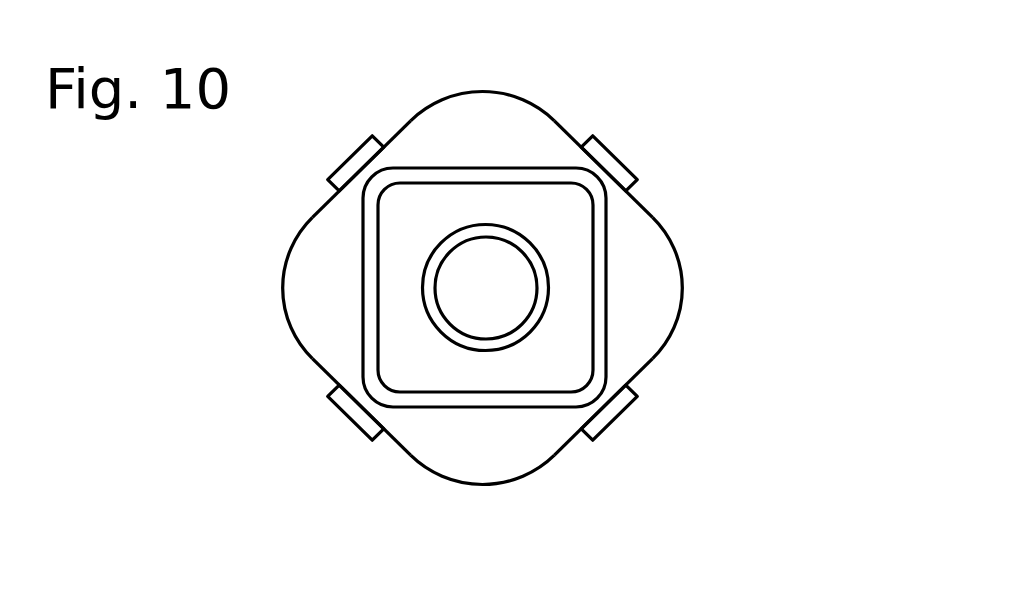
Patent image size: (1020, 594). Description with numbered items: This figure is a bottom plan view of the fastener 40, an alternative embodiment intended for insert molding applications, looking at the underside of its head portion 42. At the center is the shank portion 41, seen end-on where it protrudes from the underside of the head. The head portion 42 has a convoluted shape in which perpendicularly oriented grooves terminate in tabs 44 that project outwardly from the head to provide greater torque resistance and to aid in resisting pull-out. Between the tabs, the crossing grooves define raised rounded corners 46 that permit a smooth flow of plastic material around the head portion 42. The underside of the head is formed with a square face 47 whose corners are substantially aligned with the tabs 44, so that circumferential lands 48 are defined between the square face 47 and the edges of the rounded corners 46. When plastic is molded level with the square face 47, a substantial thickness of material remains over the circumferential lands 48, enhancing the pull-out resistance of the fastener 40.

The fastener 40 is at (742, 189).
The shank portion 41 is at (528, 267).
The head portion 42 is at (722, 419).
The tabs 44 is at (483, 288).
The raised rounded corners 46 is at (483, 288).
The square face 47 is at (450, 380).
The circumferential lands 48 is at (482, 288).